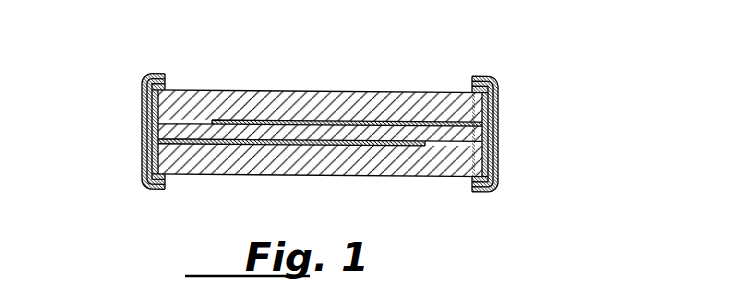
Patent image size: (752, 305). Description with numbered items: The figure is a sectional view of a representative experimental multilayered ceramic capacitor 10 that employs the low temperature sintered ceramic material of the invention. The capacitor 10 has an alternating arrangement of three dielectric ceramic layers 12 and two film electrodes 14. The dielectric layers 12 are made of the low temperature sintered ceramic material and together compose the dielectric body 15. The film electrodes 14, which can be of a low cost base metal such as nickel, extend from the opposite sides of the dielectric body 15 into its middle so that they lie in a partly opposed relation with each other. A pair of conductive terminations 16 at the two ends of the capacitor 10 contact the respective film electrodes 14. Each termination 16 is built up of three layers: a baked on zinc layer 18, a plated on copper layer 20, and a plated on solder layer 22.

The multilayered ceramic capacitor 10 is at (536, 86).
The dielectric ceramic layers 12 is at (372, 118).
The film electrodes 14 is at (441, 122).
The dielectric body 15 is at (284, 88).
The conductive terminations 16 is at (134, 110).
The baked on zinc layer 18 is at (162, 160).
The plated on copper layer 20 is at (142, 178).
The plated on solder layer 22 is at (142, 158).